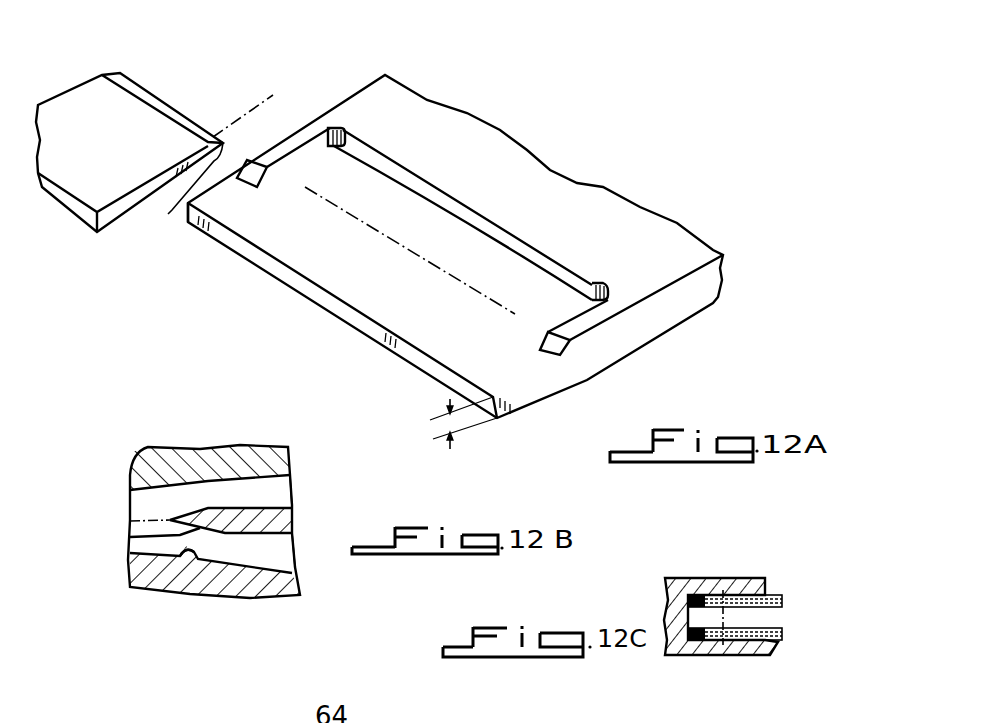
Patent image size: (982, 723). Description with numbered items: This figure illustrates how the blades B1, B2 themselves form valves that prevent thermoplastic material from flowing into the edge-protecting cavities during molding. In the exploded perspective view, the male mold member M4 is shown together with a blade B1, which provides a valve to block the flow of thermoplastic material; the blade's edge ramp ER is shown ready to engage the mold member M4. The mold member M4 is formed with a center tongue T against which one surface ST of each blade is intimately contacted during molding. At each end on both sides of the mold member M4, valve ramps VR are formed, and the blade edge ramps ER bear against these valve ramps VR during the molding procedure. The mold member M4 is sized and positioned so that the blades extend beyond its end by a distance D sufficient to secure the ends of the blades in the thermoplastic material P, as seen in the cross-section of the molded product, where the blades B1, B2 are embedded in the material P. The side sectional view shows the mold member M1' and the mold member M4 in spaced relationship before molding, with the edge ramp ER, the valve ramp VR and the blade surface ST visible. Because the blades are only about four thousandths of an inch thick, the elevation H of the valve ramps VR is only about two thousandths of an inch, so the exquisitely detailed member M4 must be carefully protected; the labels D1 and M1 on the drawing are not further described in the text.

In FIG. 12A, the tool / die D1 is at (127, 108).
In FIG. 12A, the blade edge ramps ER is at (190, 127).
In FIG. 12B, the blade edge ramps ER is at (128, 536).
In FIG. 12A, the distance D is at (276, 93).
In FIG. 12C, the distance D is at (697, 592).
In FIG. 12A, the valve ramps VR is at (250, 174).
In FIG. 12B, the valve ramps VR is at (193, 556).
In FIG. 12A, the surface of blade ST is at (116, 219).
In FIG. 12B, the surface of blade ST is at (280, 543).
In FIG. 12C, the surface of blade ST is at (780, 621).
In FIG. 12A, the male mold member M4 is at (672, 243).
In FIG. 12B, the male mold member M4 is at (247, 595).
In FIG. 12A, the center tongue T is at (463, 347).
In FIG. 12A, the elevation of valve ramps H is at (436, 420).
In FIG. 12B, the mold member M1' is at (210, 438).
In FIG. 12C, the plate body M1 is at (721, 594).
In FIG. 12C, the blade B1 is at (782, 598).
In FIG. 12C, the blade B2 is at (782, 641).
In FIG. 12C, the thermoplastic material P is at (675, 655).